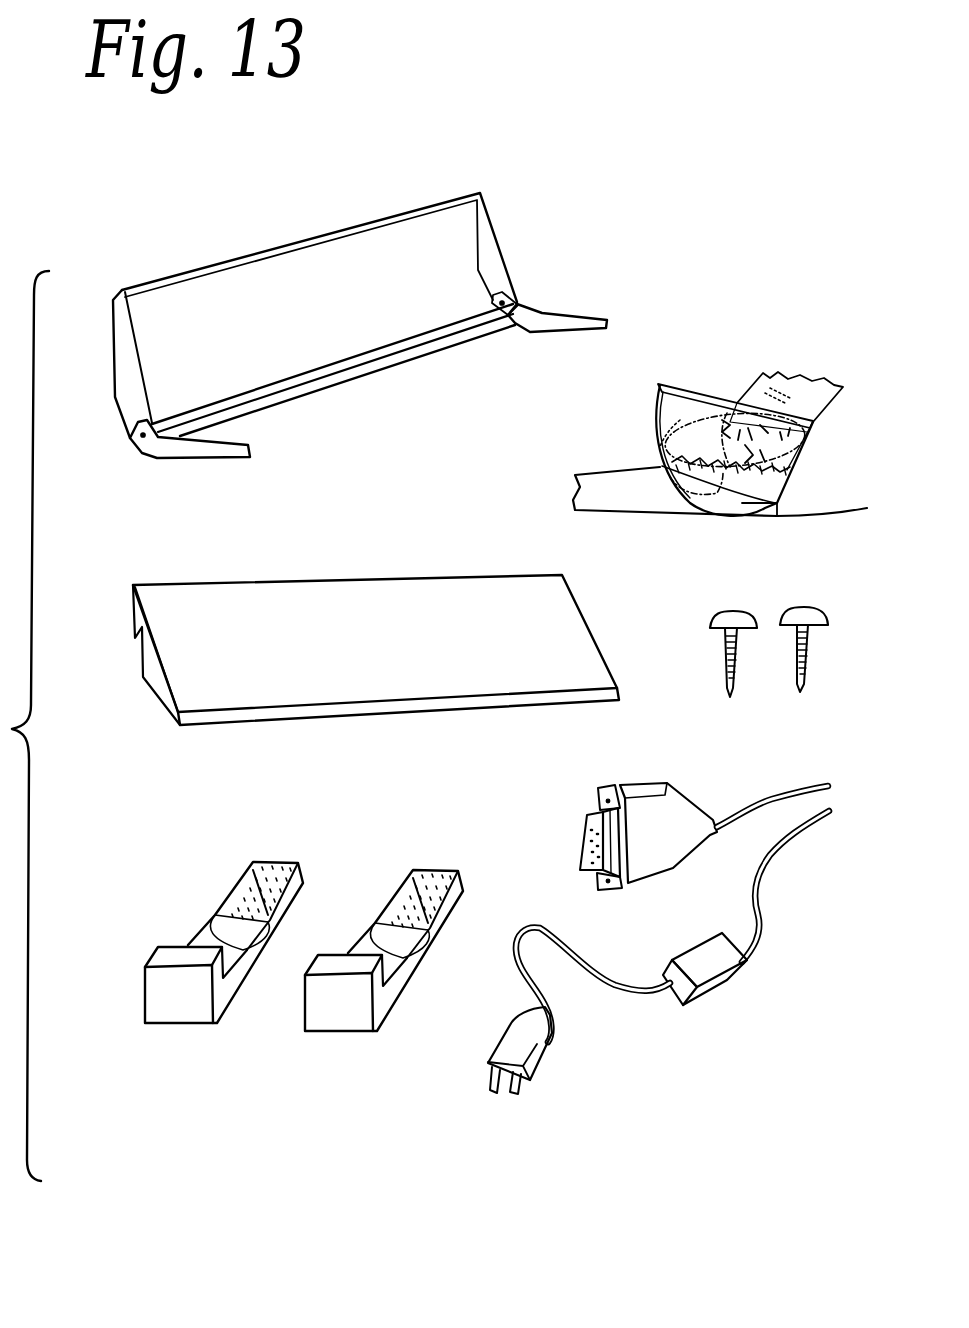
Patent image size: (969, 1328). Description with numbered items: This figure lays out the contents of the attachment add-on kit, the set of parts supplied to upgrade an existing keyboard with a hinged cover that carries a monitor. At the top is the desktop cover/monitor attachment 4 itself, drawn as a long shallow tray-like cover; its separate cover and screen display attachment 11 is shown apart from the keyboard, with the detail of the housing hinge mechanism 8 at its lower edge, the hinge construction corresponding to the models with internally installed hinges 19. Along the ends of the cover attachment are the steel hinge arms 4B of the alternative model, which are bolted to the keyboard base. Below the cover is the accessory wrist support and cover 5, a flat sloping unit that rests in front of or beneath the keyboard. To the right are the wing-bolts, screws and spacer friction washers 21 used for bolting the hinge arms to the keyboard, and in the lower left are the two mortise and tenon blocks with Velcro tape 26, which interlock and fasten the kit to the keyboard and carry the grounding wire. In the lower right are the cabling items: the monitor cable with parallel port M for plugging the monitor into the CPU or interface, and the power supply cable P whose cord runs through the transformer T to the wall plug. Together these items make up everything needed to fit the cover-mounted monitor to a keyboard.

The desktop cover/monitor attachment 4 is at (331, 337).
The steel hinge arms 4B is at (368, 381).
The accessory wrist support and cover 5 is at (376, 650).
The housing hinge mechanism 8 is at (720, 491).
The cover and screen display attachment 11 is at (652, 413).
The models with internally installed hinges 19 is at (690, 458).
The wing-bolts, screws and spacer friction washers 21 is at (769, 667).
The mortise and tenon blocks with Velcro tape 26 is at (303, 1002).
The monitor cable with parallel port M is at (704, 836).
The transformer T is at (746, 919).
The power supply cable P is at (571, 1010).